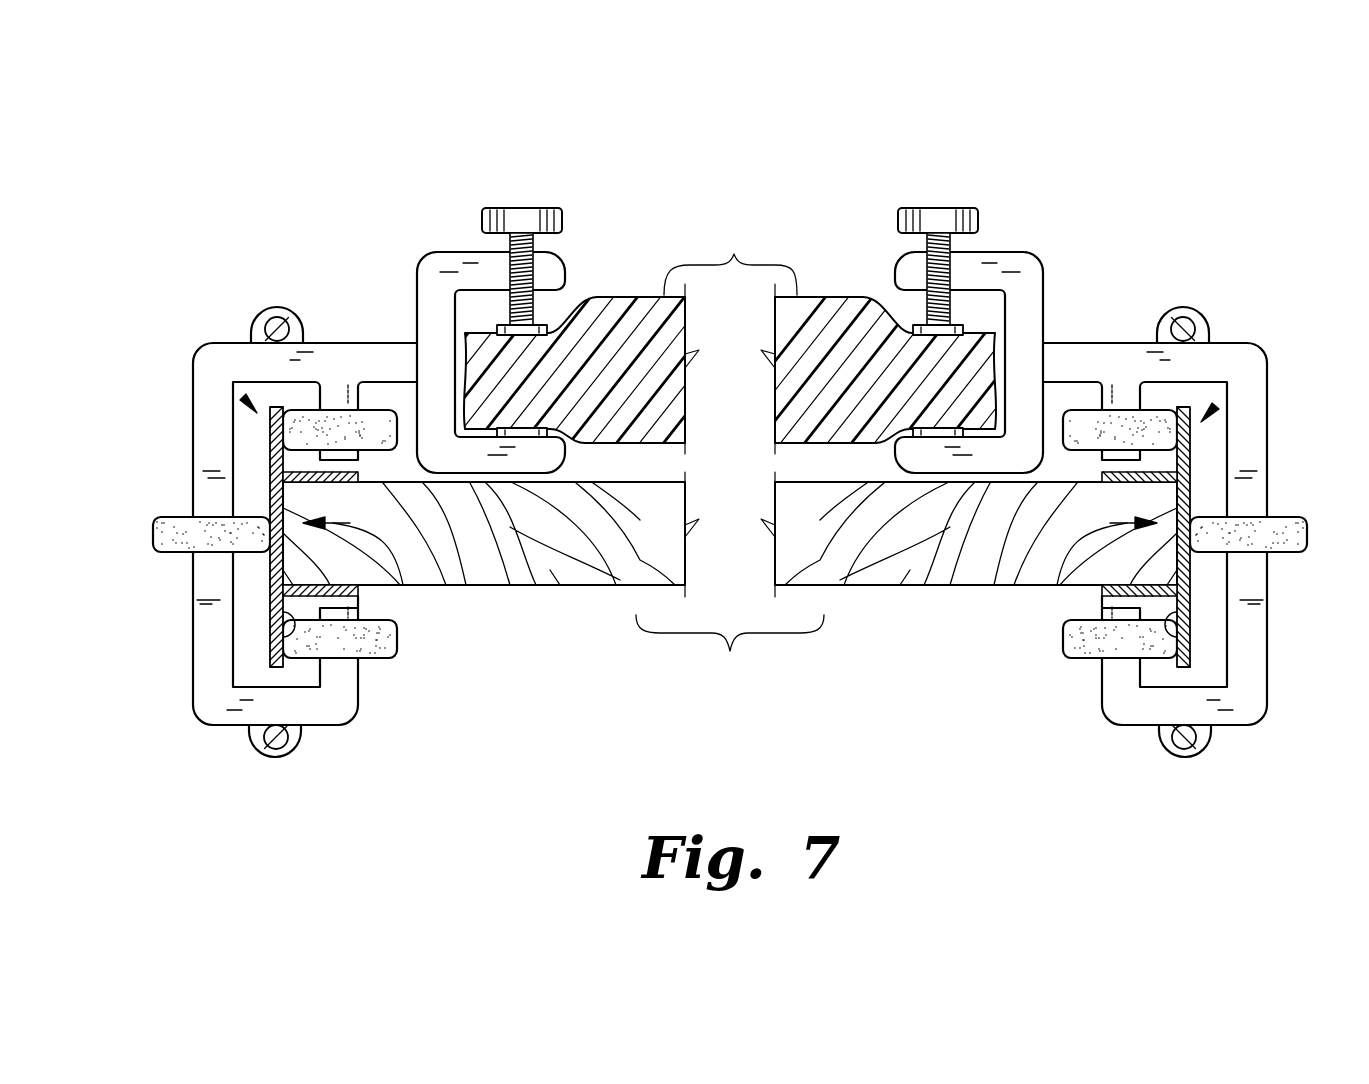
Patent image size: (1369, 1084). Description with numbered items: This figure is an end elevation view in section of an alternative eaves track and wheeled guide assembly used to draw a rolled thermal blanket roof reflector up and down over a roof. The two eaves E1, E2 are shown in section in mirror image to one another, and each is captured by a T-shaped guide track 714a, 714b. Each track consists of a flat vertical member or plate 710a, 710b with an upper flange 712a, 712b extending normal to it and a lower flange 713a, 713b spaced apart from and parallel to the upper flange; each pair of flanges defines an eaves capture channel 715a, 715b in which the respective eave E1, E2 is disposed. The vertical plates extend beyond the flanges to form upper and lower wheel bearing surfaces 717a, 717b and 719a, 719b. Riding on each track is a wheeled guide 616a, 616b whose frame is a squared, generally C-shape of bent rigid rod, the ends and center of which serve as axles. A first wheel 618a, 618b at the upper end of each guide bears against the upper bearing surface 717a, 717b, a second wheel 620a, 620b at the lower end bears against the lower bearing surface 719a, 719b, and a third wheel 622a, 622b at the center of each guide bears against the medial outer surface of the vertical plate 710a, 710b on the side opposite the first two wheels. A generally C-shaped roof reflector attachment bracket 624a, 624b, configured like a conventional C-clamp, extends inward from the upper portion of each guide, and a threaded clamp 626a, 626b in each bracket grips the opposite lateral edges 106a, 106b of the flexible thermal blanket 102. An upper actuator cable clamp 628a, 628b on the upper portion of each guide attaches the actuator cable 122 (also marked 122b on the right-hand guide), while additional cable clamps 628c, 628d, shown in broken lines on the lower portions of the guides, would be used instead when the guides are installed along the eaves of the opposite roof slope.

The flexible thermal blanket 102 is at (734, 254).
The first lateral edge of the flexible thermal blanket 106a is at (483, 483).
The second lateral edge of the flexible thermal blanket 106b is at (997, 586).
The actuator cable 122 is at (272, 320).
The pin / fastener (right) 122b is at (1188, 320).
The first wheeled guide 616a is at (198, 714).
The second wheeled guide 616b is at (1262, 718).
The first wheel 618a is at (380, 411).
The first wheel 618b is at (1082, 411).
The second wheel 620a is at (380, 660).
The second wheel 620b is at (1066, 660).
The third wheel 622a is at (157, 517).
The third wheel 622b is at (1298, 553).
The roof reflector attachment bracket 624a is at (432, 253).
The roof reflector attachment bracket 624b is at (1030, 253).
The threaded clamp 626a is at (535, 208).
The threaded clamp 626b is at (937, 208).
The upper actuator cable clamp 628a is at (252, 318).
The upper actuator cable clamp 628b is at (1208, 318).
The additional cable clamp 628c is at (250, 752).
The additional cable clamp 628d is at (1158, 748).
The vertical member or plate 710a is at (232, 430).
The vertical member or plate 710b is at (1228, 432).
The upper flange 712a is at (305, 471).
The upper flange 712b is at (1155, 471).
The lower flange 713a is at (332, 598).
The lower flange 713b is at (1128, 598).
The first guide track 714a is at (240, 382).
The second guide track 714b is at (1222, 385).
The eaves capture channel 715a is at (433, 586).
The eaves capture channel 715b is at (1027, 586).
The upper wheel bearing surface 717a is at (273, 367).
The upper wheel bearing surface 717b is at (1187, 367).
The lower wheel bearing surface 719a is at (283, 637).
The lower wheel bearing surface 719b is at (1177, 637).
The first eave E1 is at (413, 586).
The second eave E2 is at (1045, 586).